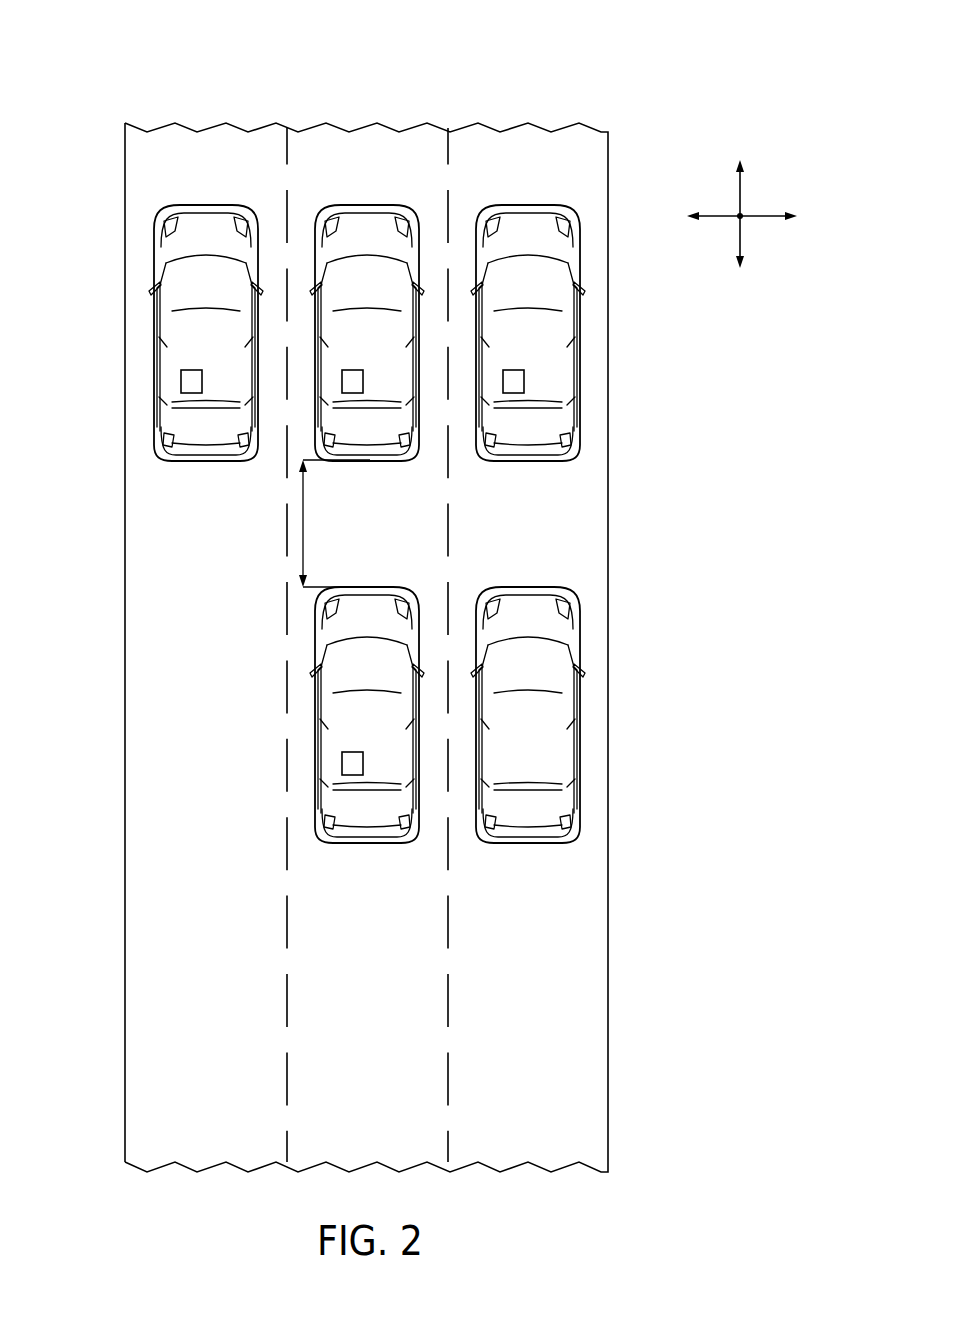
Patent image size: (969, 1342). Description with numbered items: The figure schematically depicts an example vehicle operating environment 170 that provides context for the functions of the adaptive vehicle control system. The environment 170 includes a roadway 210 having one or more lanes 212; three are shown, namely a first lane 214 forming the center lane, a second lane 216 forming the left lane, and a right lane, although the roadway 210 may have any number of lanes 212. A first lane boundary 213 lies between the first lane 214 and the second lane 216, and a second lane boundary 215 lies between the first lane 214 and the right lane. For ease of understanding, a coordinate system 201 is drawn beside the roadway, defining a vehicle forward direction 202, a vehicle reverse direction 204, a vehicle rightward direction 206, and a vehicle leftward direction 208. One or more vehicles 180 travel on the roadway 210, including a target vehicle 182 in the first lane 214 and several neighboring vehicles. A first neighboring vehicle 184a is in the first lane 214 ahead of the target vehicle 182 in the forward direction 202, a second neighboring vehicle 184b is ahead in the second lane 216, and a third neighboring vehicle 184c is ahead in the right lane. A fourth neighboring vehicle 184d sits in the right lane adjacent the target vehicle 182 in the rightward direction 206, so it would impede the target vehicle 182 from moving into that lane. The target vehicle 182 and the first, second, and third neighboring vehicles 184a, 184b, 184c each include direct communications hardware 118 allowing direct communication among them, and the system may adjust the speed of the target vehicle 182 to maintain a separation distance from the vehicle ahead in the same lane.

The vehicle operating environment 170 is at (613, 88).
The roadway 210 is at (616, 405).
The lanes 212 is at (432, 145).
The first lane 214 is at (385, 140).
The second lane 216 is at (228, 142).
The first lane boundary 213 is at (287, 689).
The second lane boundary 215 is at (450, 1005).
The vehicles 180 is at (590, 323).
The target vehicle 182 is at (366, 843).
The first neighboring vehicle 184a is at (372, 205).
The second neighboring vehicle 184b is at (207, 204).
The third neighboring vehicle 184c is at (531, 204).
The fourth neighboring vehicle 184d is at (528, 843).
The direct communications hardware 118 is at (364, 545).
The coordinate system 201 is at (766, 148).
The vehicle forward direction 202 is at (742, 193).
The vehicle reverse direction 204 is at (738, 240).
The vehicle rightward direction 206 is at (763, 218).
The vehicle leftward direction 208 is at (716, 213).